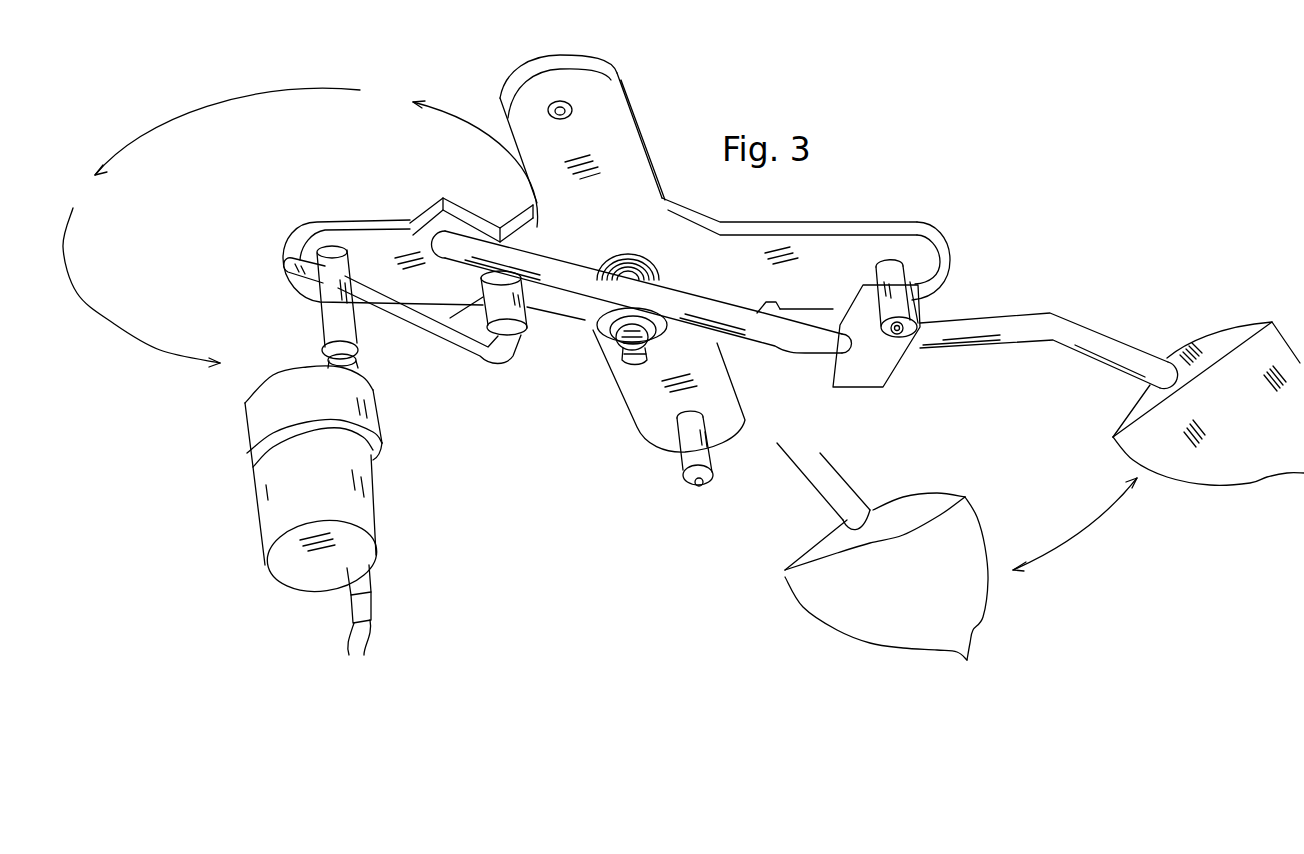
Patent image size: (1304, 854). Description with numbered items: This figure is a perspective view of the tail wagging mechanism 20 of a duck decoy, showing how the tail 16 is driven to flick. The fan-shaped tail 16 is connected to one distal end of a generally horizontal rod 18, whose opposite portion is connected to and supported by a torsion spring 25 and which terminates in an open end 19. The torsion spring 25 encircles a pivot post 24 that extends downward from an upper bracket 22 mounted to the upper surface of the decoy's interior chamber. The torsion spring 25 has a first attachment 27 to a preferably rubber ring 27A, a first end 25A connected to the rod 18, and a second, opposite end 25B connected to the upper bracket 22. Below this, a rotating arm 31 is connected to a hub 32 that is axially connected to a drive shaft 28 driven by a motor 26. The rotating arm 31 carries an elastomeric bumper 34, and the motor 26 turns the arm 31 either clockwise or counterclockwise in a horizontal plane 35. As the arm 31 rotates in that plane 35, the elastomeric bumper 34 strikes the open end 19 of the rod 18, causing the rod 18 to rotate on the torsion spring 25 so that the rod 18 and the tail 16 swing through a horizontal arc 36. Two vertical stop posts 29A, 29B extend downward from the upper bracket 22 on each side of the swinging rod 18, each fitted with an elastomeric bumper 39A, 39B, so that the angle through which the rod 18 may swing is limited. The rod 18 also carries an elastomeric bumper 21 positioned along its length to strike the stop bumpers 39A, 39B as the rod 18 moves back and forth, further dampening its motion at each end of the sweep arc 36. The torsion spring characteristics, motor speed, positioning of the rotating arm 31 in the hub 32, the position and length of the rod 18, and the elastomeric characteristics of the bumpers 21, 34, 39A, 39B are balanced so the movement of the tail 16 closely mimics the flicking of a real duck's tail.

The tail 16 is at (1208, 345).
The rod 18 is at (984, 322).
The open end 19 is at (460, 248).
The tail wagging mechanism 20 is at (992, 82).
The elastomeric bumper 21 is at (868, 373).
The upper bracket 22 is at (617, 81).
The pivot post 24 is at (622, 357).
The torsion spring 25 is at (646, 268).
The first end 25A is at (777, 315).
The second end 25B is at (450, 225).
The motor 26 is at (262, 423).
The first attachment 27 is at (607, 308).
The rubber ring 27A is at (610, 314).
The drive shaft 28 is at (352, 350).
The vertical stop post 29A is at (908, 347).
The vertical stop post 29B is at (704, 489).
The rotating arm 31 is at (455, 335).
The hub 32 is at (328, 316).
The elastomeric bumper 34 is at (497, 292).
The horizontal plane 35 is at (204, 102).
The horizontal arc 36 is at (1084, 531).
The elastomeric bumper 39A is at (897, 287).
The elastomeric bumper 39B is at (680, 460).